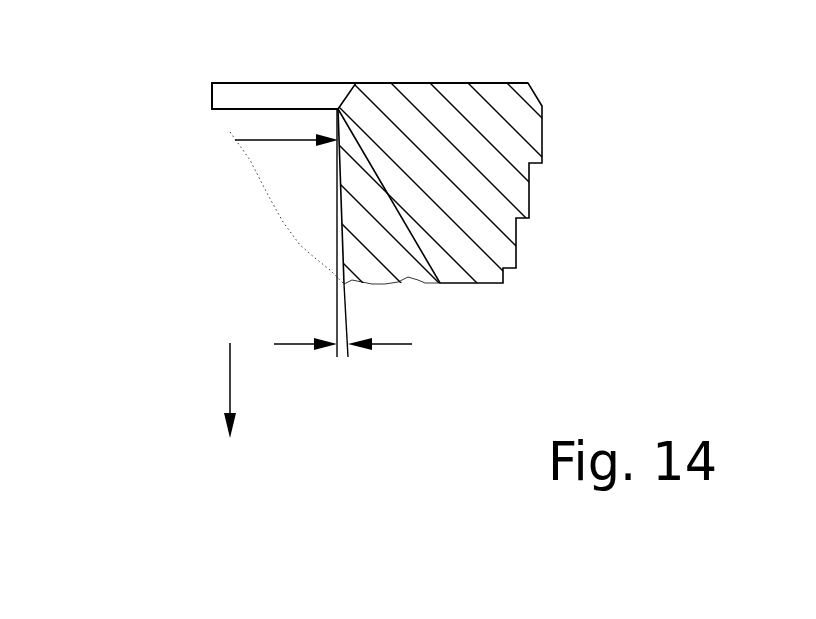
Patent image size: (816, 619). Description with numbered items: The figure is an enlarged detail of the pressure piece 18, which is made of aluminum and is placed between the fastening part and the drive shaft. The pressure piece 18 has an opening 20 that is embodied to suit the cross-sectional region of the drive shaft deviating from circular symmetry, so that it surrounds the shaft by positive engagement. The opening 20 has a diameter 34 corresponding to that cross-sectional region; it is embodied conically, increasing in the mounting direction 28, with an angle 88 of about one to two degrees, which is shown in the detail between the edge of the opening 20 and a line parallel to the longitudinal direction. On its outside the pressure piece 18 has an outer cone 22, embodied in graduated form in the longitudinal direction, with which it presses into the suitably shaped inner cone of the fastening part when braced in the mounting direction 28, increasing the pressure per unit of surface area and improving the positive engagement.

The pressure piece 18 is at (562, 110).
The opening 20 is at (288, 125).
The outer cone 22 is at (530, 204).
The mounting direction 28 is at (225, 386).
The diameter 34 is at (199, 207).
The angle 88 is at (392, 344).